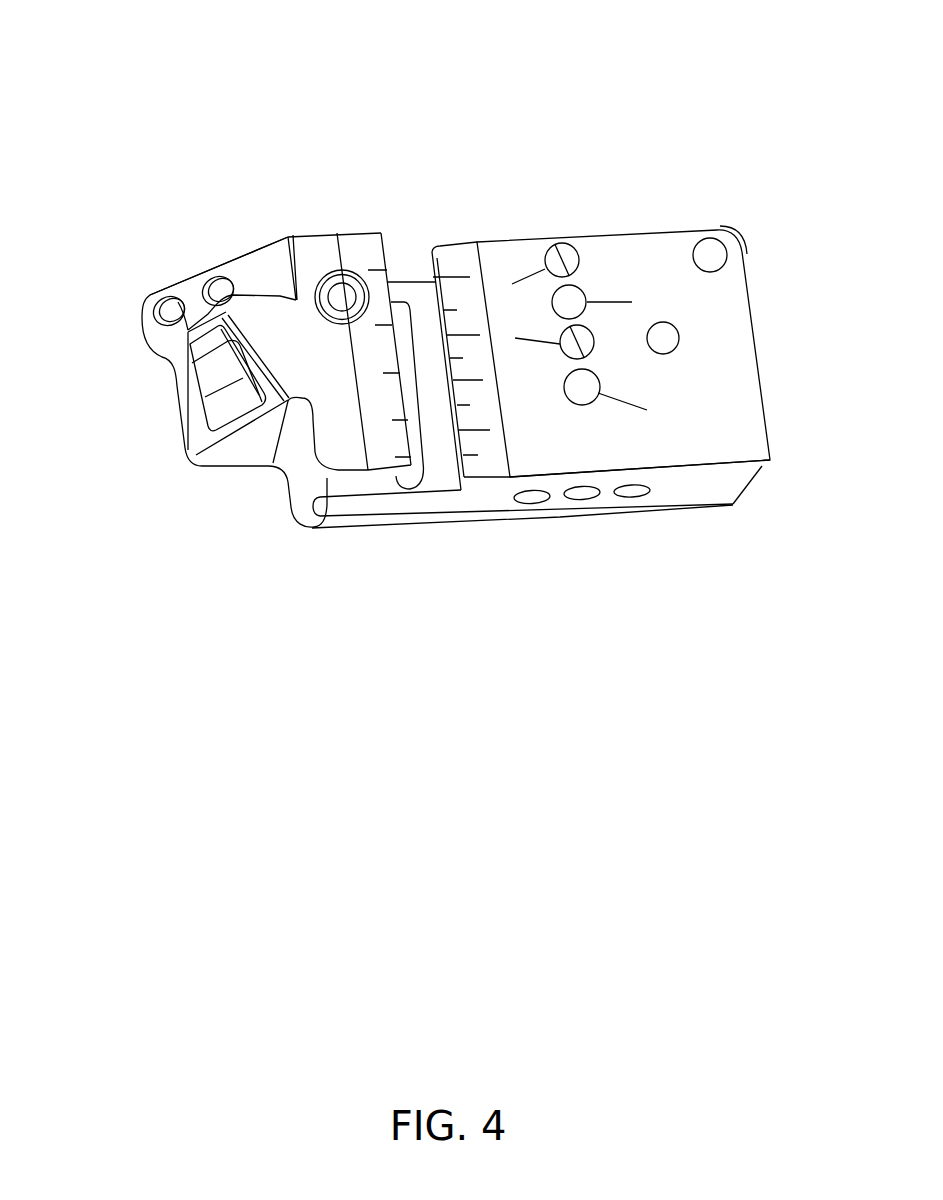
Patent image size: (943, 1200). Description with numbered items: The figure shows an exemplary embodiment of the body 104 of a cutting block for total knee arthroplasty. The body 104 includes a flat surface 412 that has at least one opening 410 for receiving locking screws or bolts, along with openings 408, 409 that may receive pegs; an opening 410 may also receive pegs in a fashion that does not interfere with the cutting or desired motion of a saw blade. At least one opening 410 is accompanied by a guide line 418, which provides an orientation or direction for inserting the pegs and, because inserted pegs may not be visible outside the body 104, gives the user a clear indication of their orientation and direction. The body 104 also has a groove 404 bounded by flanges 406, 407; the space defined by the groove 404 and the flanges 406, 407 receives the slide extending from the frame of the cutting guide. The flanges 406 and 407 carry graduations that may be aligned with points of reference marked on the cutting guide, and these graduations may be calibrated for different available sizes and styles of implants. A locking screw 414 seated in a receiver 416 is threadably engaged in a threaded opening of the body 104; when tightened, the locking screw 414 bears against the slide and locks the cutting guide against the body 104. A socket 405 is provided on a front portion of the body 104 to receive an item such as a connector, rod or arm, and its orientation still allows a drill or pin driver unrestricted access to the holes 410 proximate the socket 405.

The body 104 is at (192, 57).
The groove 404 is at (406, 512).
The socket 405 is at (228, 403).
The flange 406 is at (473, 478).
The flange 407 is at (380, 441).
The opening 408 is at (525, 505).
The opening 409 is at (633, 505).
The opening 410 is at (150, 305).
The flat surface 412 is at (696, 500).
The locking screw 414 is at (325, 288).
The receiver 416 is at (330, 258).
The guide line 418 is at (632, 283).